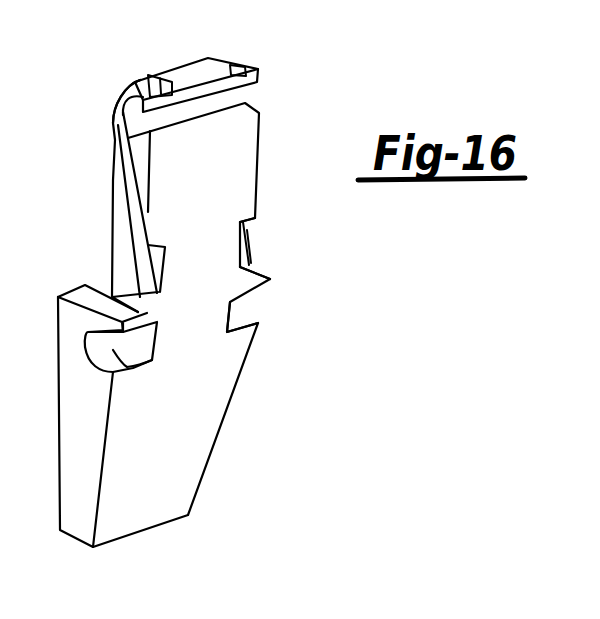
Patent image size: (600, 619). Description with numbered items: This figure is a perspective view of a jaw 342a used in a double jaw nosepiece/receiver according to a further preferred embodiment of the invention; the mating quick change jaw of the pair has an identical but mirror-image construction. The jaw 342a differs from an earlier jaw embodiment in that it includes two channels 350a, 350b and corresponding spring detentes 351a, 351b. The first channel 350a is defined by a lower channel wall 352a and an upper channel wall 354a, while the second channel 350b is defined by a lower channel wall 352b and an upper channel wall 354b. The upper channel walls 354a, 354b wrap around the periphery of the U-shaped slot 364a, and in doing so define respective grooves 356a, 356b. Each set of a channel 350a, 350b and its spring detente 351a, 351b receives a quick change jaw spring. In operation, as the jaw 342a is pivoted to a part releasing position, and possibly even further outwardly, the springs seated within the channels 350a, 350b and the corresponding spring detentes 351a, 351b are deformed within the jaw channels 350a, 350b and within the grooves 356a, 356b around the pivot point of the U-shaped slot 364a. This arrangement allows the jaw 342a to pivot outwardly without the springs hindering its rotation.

The jaw 342a is at (250, 408).
The channel 350a is at (121, 180).
The channel 350b is at (252, 238).
The spring detente 351a is at (115, 352).
The spring detente 351b is at (231, 330).
The lower channel wall 352a is at (127, 227).
The lower channel wall 352b is at (247, 274).
The upper channel wall 354a is at (118, 115).
The upper channel wall 354b is at (250, 220).
The groove 356a is at (152, 82).
The groove 356b is at (240, 63).
The U-shaped slot 364a is at (228, 112).